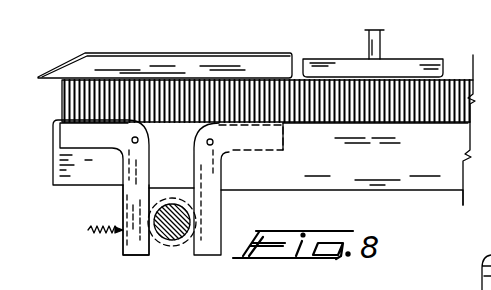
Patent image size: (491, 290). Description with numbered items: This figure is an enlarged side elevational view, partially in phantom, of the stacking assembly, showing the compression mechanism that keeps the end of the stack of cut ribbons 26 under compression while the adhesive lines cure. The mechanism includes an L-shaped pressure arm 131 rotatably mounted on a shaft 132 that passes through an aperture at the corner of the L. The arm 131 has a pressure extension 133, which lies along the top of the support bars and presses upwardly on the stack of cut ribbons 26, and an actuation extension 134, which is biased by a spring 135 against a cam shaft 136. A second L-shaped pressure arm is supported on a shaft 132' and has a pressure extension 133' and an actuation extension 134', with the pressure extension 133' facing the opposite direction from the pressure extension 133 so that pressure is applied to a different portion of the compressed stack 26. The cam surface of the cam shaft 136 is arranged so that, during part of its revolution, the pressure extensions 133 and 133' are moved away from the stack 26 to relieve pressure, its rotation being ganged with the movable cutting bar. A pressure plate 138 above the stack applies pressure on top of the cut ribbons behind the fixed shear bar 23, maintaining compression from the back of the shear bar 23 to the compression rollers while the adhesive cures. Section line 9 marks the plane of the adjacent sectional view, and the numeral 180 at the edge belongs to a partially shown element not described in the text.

The fixed shear bar 23 is at (133, 52).
The stack of cut ribbons 26 is at (218, 77).
The pressure plate 138 is at (405, 66).
The section line 9- 9 is at (100, 102).
The L-shaped pressure arm 131 is at (108, 168).
The shaft 132 is at (161, 138).
The shaft 132' is at (242, 161).
The pressure extension 133 is at (94, 154).
The pressure extension 133' is at (343, 164).
The actuation extension 134 is at (122, 218).
The actuation extension 134' is at (232, 189).
The spring 135 is at (88, 233).
The cam shaft 136 is at (178, 241).
The connector 180 is at (482, 283).